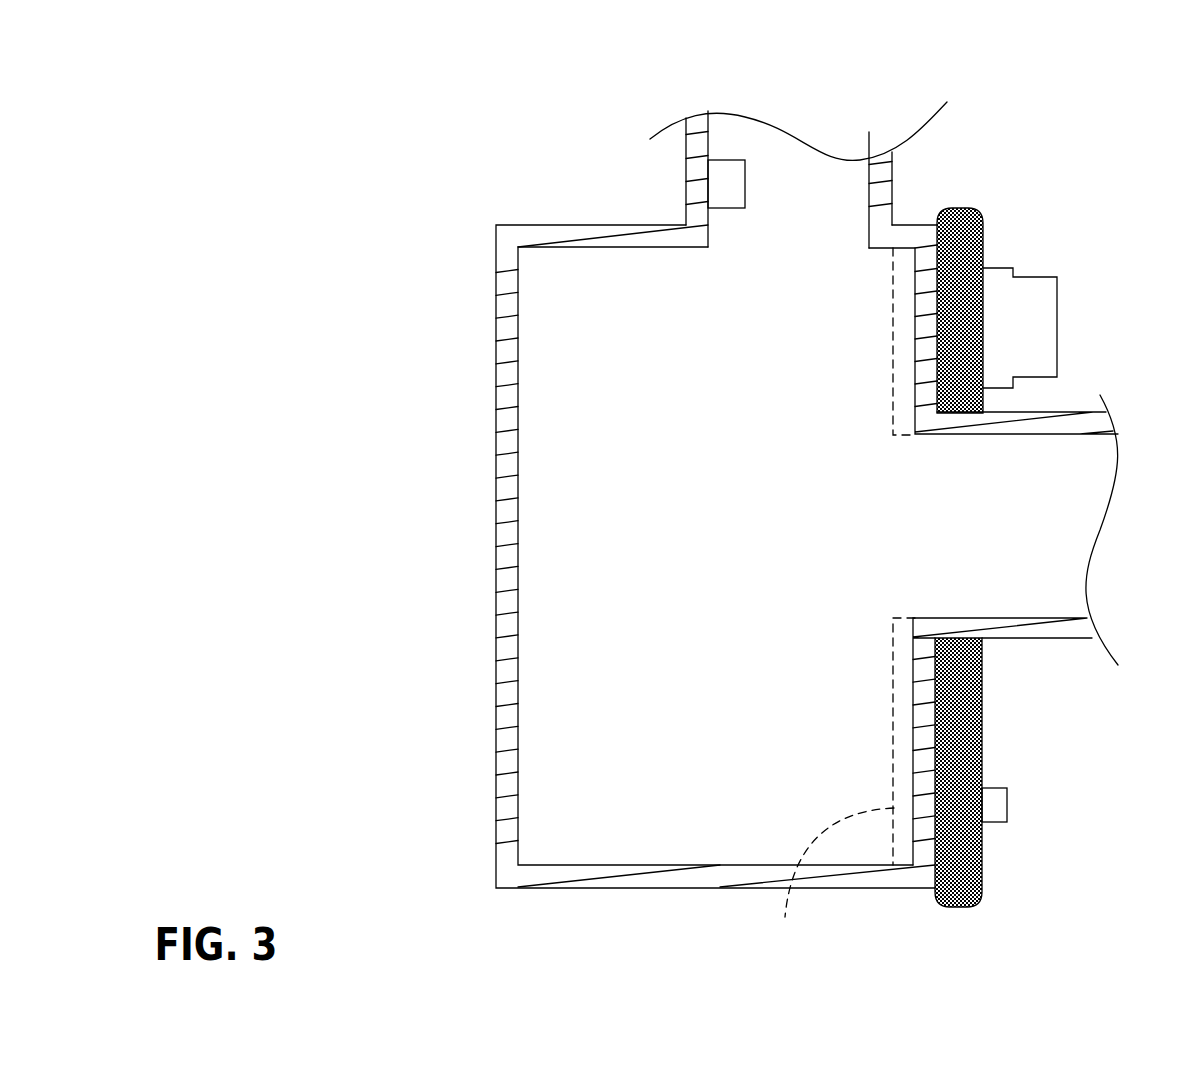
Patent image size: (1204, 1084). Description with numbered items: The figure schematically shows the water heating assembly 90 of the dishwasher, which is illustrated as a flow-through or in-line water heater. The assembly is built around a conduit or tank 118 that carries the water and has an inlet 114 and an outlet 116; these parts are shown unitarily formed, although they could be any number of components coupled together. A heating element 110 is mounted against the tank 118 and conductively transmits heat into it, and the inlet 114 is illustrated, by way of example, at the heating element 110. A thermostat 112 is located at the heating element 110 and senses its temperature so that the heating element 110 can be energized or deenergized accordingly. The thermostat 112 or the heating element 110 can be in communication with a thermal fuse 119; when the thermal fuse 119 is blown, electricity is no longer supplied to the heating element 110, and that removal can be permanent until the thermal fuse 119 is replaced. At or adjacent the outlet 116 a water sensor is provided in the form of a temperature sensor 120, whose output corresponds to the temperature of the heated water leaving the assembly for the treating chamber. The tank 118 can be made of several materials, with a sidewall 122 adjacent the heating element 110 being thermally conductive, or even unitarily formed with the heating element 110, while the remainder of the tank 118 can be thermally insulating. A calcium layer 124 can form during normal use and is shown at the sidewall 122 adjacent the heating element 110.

The water heating assembly 90 is at (1160, 118).
The heating element 110 is at (983, 227).
The thermostat 112 is at (1058, 302).
The inlet 114 is at (1035, 640).
The outlet 116 is at (893, 168).
The tank 118 is at (495, 602).
The thermal fuse 119 is at (1007, 805).
The temperature sensor 120 is at (723, 162).
The sidewall 122 is at (937, 778).
The calcium layer 124 is at (841, 595).